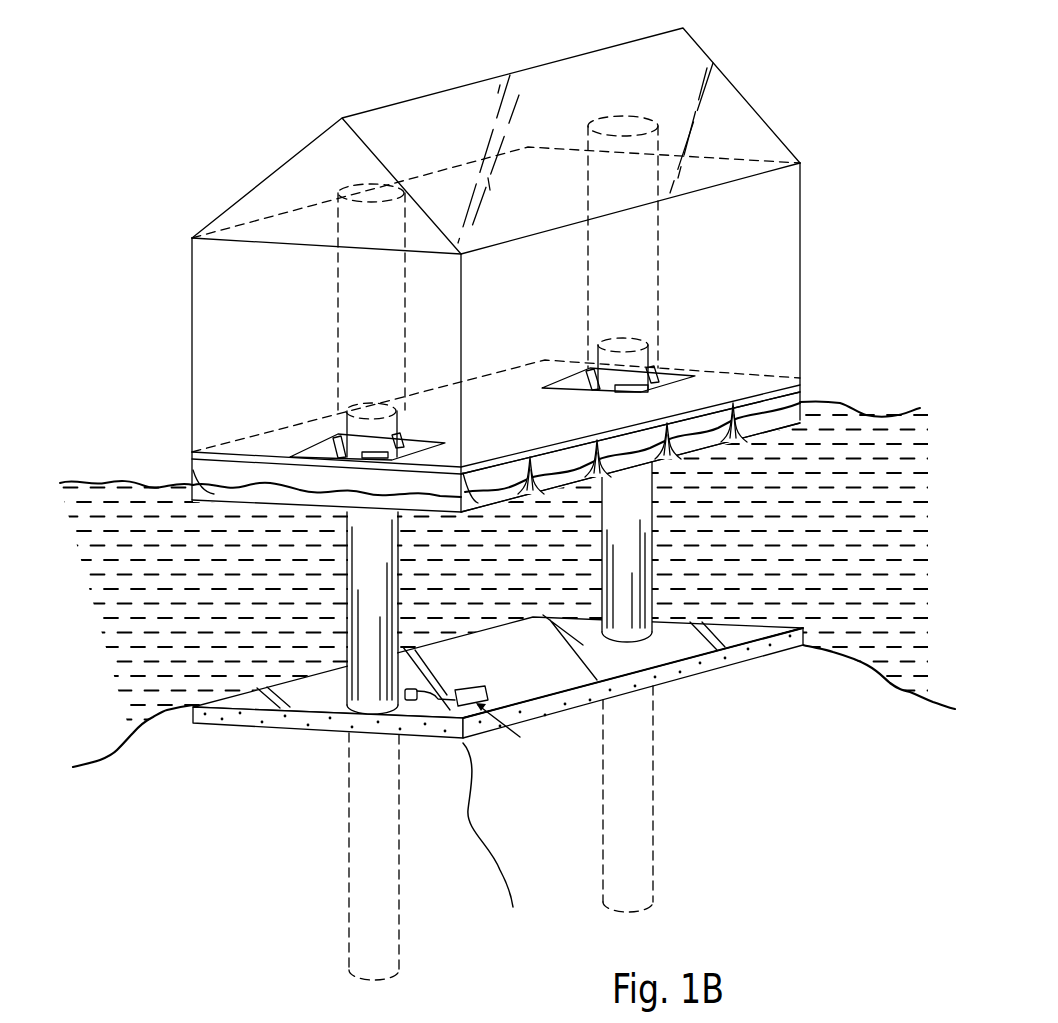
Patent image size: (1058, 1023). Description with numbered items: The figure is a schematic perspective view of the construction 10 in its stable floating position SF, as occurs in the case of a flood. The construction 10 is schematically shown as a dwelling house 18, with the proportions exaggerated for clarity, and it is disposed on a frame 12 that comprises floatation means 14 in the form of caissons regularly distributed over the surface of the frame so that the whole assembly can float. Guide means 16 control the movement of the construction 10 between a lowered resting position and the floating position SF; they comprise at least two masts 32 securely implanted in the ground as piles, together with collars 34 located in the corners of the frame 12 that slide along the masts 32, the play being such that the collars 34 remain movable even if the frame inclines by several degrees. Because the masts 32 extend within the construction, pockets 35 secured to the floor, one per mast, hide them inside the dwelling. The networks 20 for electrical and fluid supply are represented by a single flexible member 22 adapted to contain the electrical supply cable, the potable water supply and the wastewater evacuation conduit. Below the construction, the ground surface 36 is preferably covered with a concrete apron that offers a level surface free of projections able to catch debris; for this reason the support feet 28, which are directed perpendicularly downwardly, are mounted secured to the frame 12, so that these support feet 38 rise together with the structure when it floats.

The construction 10 is at (498, 267).
The frame 12 is at (480, 436).
The floatation means 14 is at (800, 400).
The guide means 16 is at (664, 351).
The dwelling house 18 is at (736, 86).
The networks 20 is at (498, 709).
The flexible member 22 is at (462, 690).
The support feet 28 is at (531, 493).
The masts 32 is at (660, 587).
The collars 34 is at (570, 382).
The pockets 35 is at (342, 315).
The ground surface 36 is at (797, 650).
The support feet 38 is at (700, 668).
The stable floating position SF is at (853, 398).